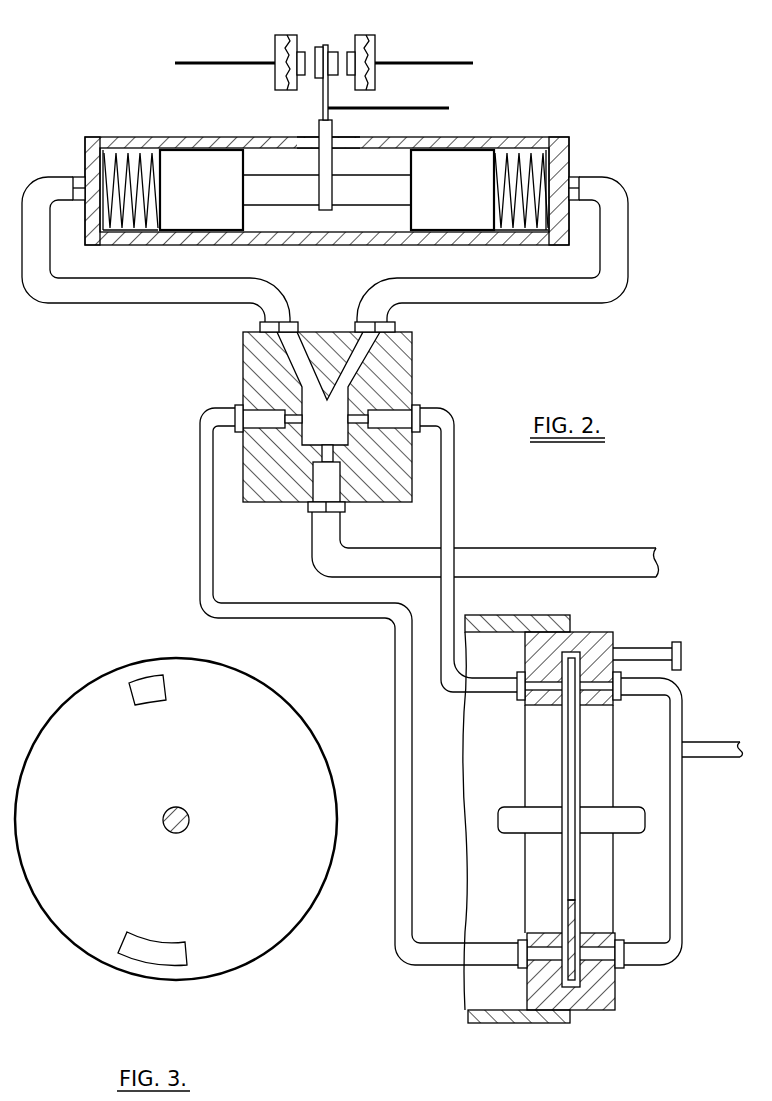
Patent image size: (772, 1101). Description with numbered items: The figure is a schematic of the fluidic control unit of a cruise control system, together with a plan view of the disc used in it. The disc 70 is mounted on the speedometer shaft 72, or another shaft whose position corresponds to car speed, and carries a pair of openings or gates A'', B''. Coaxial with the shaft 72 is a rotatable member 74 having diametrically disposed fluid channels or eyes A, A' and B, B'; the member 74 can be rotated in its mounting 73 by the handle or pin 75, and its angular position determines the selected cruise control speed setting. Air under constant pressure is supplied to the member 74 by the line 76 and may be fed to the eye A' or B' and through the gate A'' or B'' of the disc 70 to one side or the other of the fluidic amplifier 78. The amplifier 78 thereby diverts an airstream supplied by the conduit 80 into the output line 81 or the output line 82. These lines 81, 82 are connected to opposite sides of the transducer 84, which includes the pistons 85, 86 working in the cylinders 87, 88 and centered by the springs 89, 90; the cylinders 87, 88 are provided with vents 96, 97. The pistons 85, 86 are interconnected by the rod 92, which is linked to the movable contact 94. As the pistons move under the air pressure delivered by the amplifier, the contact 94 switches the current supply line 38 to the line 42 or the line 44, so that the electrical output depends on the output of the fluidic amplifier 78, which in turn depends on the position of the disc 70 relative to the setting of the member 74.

In FIG. 2, the current supply line 38 is at (397, 108).
In FIG. 2, the line 42 is at (236, 62).
In FIG. 2, the line 44 is at (425, 62).
In FIG. 2, the disc 70 is at (572, 884).
In FIG. 3, the disc 70 is at (67, 720).
In FIG. 2, the speedometer shaft 72 is at (515, 811).
In FIG. 3, the speedometer shaft 72 is at (191, 824).
In FIG. 2, the mounting 73 is at (490, 1023).
In FIG. 2, the rotatable member 74 is at (612, 653).
In FIG. 2, the handle or pin 75 is at (681, 650).
In FIG. 2, the line 76 is at (681, 832).
In FIG. 2, the fluidic amplifier 78 is at (273, 501).
In FIG. 2, the conduit 80 is at (513, 553).
In FIG. 2, the output line 81 is at (153, 298).
In FIG. 2, the output line 82 is at (502, 298).
In FIG. 2, the transducer 84 is at (331, 241).
In FIG. 2, the piston 85 is at (203, 165).
In FIG. 2, the piston 86 is at (474, 160).
In FIG. 2, the cylinder 87 is at (133, 156).
In FIG. 2, the cylinder 88 is at (526, 152).
In FIG. 2, the spring 89 is at (124, 214).
In FIG. 2, the spring 90 is at (530, 214).
In FIG. 2, the rod 92 is at (295, 199).
In FIG. 2, the movable contact 94 is at (320, 72).
In FIG. 2, the vent 96 is at (86, 157).
In FIG. 2, the vent 97 is at (570, 156).
In FIG. 2, the fluid channel or eye A is at (627, 710).
In FIG. 2, the fluid channel or eye A' is at (521, 657).
In FIG. 3, the opening or gate A'' is at (170, 691).
In FIG. 2, the fluid channel or eye B is at (586, 971).
In FIG. 2, the fluid channel or eye B' is at (517, 929).
In FIG. 2, the opening or gate B'' is at (613, 989).
In FIG. 3, the opening or gate B'' is at (152, 936).